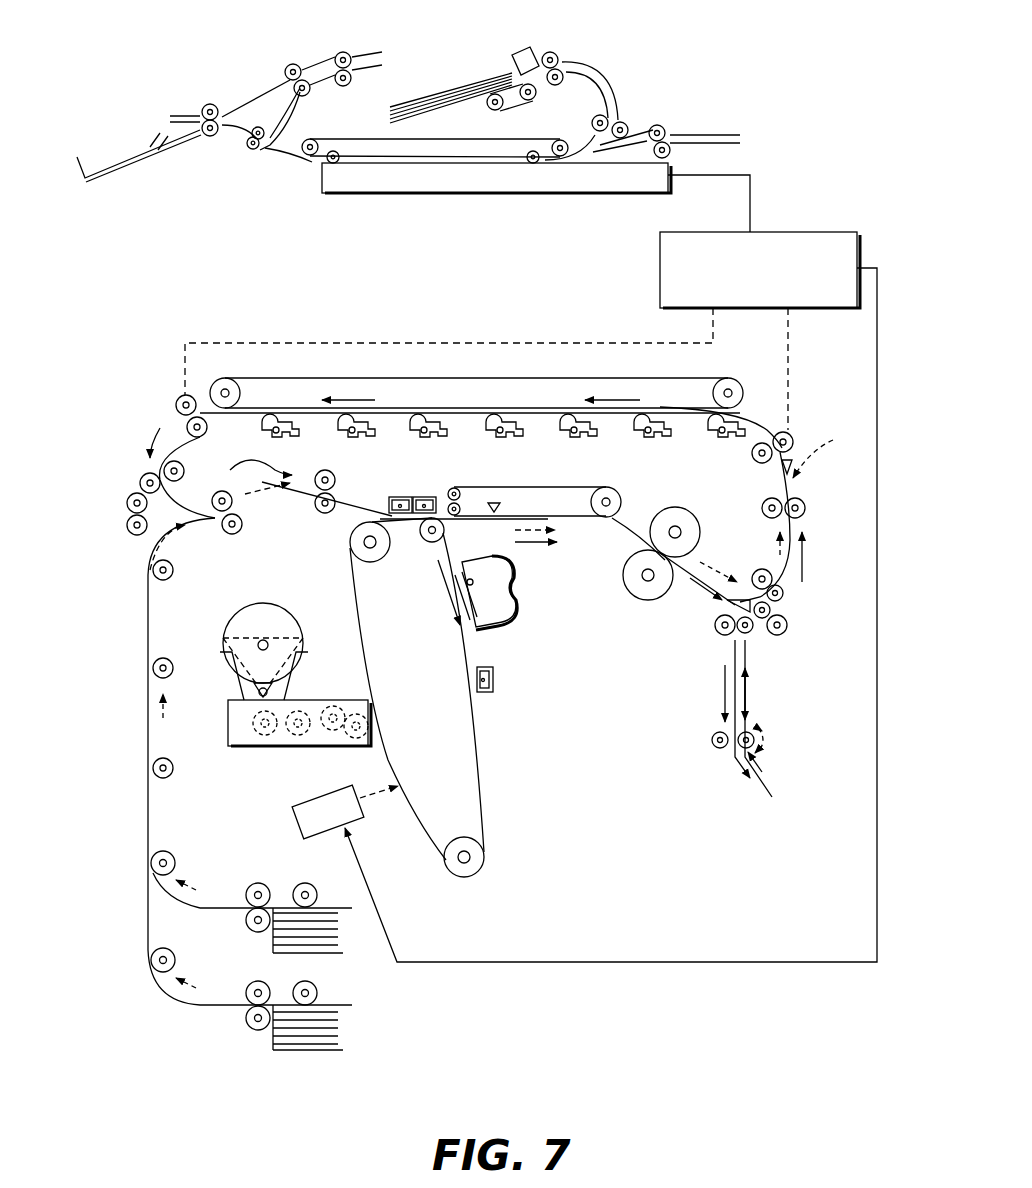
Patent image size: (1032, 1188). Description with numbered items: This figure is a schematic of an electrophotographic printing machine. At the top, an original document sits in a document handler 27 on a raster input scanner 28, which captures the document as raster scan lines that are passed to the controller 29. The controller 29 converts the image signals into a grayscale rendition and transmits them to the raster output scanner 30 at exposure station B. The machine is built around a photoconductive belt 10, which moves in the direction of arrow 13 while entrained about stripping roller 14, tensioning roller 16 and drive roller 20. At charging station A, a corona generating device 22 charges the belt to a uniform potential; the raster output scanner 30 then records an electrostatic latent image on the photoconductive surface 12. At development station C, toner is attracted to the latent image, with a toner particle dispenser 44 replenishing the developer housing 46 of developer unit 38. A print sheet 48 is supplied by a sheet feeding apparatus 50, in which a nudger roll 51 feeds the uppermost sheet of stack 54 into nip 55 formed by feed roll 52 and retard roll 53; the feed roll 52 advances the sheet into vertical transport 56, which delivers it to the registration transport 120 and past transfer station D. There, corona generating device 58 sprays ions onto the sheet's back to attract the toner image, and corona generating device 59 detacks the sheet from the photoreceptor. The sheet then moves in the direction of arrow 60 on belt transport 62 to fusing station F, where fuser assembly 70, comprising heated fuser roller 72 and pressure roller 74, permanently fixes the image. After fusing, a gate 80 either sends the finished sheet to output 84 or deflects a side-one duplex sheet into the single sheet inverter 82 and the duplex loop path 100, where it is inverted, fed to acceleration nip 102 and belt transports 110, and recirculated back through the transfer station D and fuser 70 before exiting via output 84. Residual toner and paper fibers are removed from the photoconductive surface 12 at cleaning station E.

The document handler 27 is at (646, 62).
The raster input scanner (RIS) 28 is at (442, 182).
The controller (electronic subsystem) 29 is at (660, 280).
The duplex loop path 100 is at (472, 358).
The belt transports 110 is at (284, 378).
The acceleration nip 102 is at (176, 401).
The registration transport 120 is at (348, 490).
The corona generating device 58 is at (400, 497).
The corona generating device 59 is at (428, 497).
The transfer station D is at (386, 490).
The belt transport 62 is at (585, 487).
The arrow (sheet direction) 60 is at (555, 539).
The photoconductive belt 10 is at (418, 721).
The photoconductive surface 12 is at (430, 845).
The arrow (belt direction) 13 is at (447, 605).
The stripping roller 14 is at (428, 541).
The tensioning roller 16 is at (352, 545).
The drive roller 20 is at (465, 877).
The corona generating device 22 is at (497, 667).
The cleaning station E is at (520, 572).
The charging station A is at (506, 678).
The raster output scanner (ROS) 30 is at (310, 794).
The exposure station B is at (370, 826).
The developer unit 38 is at (272, 683).
The toner particle dispenser 44 is at (288, 620).
The developer housing 46 is at (237, 745).
The development station C is at (272, 754).
The print sheet 48 is at (170, 730).
The vertical transport 56 is at (148, 840).
The sheet feeding apparatus 50 is at (284, 957).
The nudger roll 51 is at (307, 882).
The feed roll 52 is at (262, 882).
The retard roll 53 is at (250, 928).
The stack 54 is at (318, 952).
The nip 55 is at (249, 892).
The fuser assembly 70 is at (663, 559).
The fuser roller 72 is at (641, 600).
The pressure roller 74 is at (688, 516).
The fusing station F is at (651, 518).
The output (exit path) 84 is at (838, 441).
The gate 80 is at (722, 614).
The single sheet inverter 82 is at (795, 642).